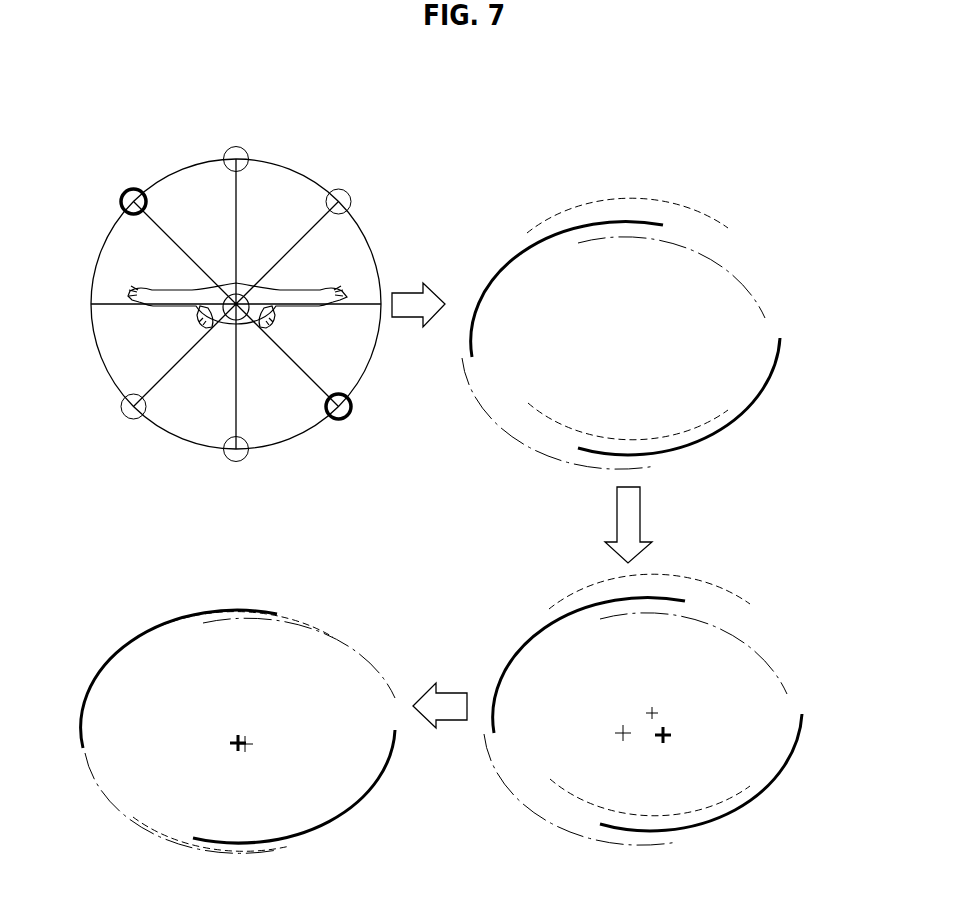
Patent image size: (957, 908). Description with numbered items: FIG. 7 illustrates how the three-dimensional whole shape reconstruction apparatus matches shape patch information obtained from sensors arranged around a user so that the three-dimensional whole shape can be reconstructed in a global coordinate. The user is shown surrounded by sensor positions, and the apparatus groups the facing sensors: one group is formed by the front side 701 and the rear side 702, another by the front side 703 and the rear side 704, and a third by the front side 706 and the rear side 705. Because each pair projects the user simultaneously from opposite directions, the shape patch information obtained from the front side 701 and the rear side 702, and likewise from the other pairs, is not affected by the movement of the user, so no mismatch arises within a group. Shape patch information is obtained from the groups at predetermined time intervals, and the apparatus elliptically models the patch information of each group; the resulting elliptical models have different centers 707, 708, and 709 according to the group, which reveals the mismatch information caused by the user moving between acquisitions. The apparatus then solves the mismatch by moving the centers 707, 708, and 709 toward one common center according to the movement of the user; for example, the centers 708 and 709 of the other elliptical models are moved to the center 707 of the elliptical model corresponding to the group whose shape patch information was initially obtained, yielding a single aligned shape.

The front side 701 is at (236, 461).
The rear side 702 is at (236, 147).
The front side 703 is at (340, 419).
The rear side 704 is at (133, 189).
The rear side 705 is at (335, 190).
The front side 706 is at (122, 410).
The center of elliptical model 707 is at (462, 718).
The center of elliptical model 708 is at (681, 744).
The center of elliptical model 709 is at (604, 743).